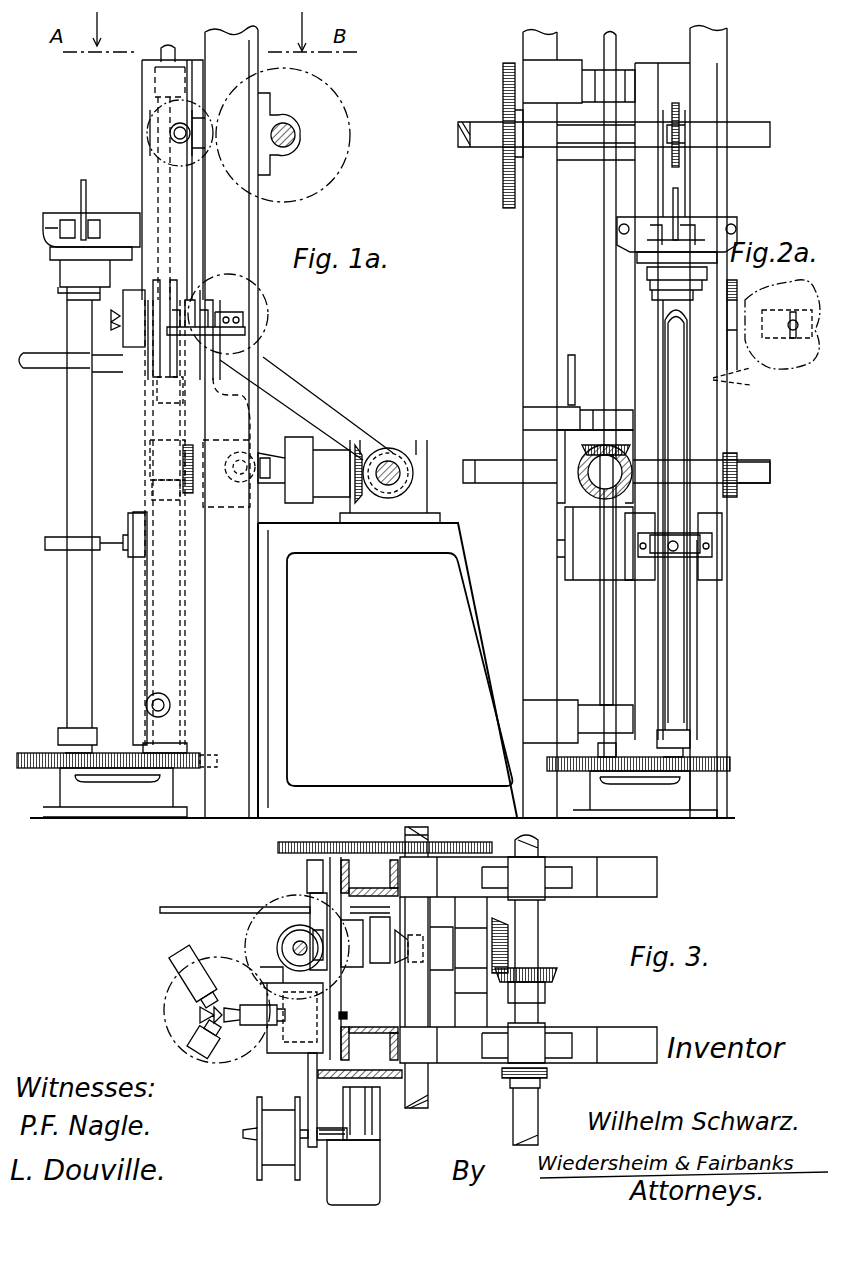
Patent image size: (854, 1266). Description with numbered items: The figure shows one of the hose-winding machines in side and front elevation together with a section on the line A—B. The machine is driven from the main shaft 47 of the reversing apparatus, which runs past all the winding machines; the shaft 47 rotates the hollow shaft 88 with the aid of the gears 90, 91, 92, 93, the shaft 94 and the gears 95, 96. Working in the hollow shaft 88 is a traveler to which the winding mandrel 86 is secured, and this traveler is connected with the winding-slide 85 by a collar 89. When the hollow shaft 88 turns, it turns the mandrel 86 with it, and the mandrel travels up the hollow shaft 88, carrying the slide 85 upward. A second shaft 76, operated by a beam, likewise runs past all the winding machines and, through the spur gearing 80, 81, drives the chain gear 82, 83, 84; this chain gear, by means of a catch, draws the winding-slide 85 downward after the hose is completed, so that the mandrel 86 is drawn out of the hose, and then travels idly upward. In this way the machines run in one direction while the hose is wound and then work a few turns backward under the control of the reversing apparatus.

In FIG. 1A, the main shaft 47 is at (392, 474).
In FIG. 2A, the main shaft 47 is at (485, 463).
In FIG. 3, the main shaft 47 is at (530, 1108).
In FIG. 1A, the shaft 76 is at (301, 136).
In FIG. 2A, the shaft 76 is at (478, 141).
In FIG. 3, the shaft 76 is at (441, 969).
In FIG. 1A, the spur gearing 80 is at (314, 190).
In FIG. 2A, the spur gearing 80 is at (508, 186).
In FIG. 3, the spur gearing 80 is at (464, 846).
In FIG. 1A, the spur gearing 81 is at (150, 124).
In FIG. 2A, the spur gearing 81 is at (505, 118).
In FIG. 3, the spur gearing 81 is at (278, 848).
In FIG. 1A, the chain gear 82 is at (152, 154).
In FIG. 2A, the chain gear 82 is at (677, 105).
In FIG. 3, the chain gear 82 is at (342, 1013).
In FIG. 1A, the chain gear 83 is at (147, 386).
In FIG. 1A, the chain gear 84 is at (148, 707).
In FIG. 1A, the winding-slide 85 is at (140, 565).
In FIG. 2A, the winding-slide 85 is at (720, 568).
In FIG. 3, the winding-slide 85 is at (265, 1065).
In FIG. 1A, the mandrel 86 is at (83, 200).
In FIG. 2A, the mandrel 86 is at (680, 200).
In FIG. 3, the mandrel 86 is at (207, 1014).
In FIG. 1A, the hollow shaft 88 is at (72, 632).
In FIG. 2A, the hollow shaft 88 is at (687, 636).
In FIG. 1A, the collar 89 is at (65, 552).
In FIG. 2A, the collar 89 is at (697, 543).
In FIG. 1A, the gear 90 is at (412, 480).
In FIG. 3, the gear 90 is at (556, 978).
In FIG. 1A, the gear 91 is at (356, 448).
In FIG. 2A, the gear 91 is at (583, 470).
In FIG. 3, the gear 91 is at (545, 943).
In FIG. 1A, the gear 92 is at (180, 468).
In FIG. 2A, the gear 92 is at (597, 498).
In FIG. 3, the gear 92 is at (348, 907).
In FIG. 1A, the gear 93 is at (180, 455).
In FIG. 2A, the gear 93 is at (585, 452).
In FIG. 3, the gear 93 is at (282, 947).
In FIG. 1A, the shaft 94 is at (167, 46).
In FIG. 2A, the shaft 94 is at (603, 605).
In FIG. 3, the shaft 94 is at (298, 946).
In FIG. 1A, the gear 95 is at (192, 756).
In FIG. 2A, the gear 95 is at (588, 770).
In FIG. 3, the gear 95 is at (283, 900).
In FIG. 1A, the gear 96 is at (44, 745).
In FIG. 2A, the gear 96 is at (722, 760).
In FIG. 3, the gear 96 is at (185, 998).